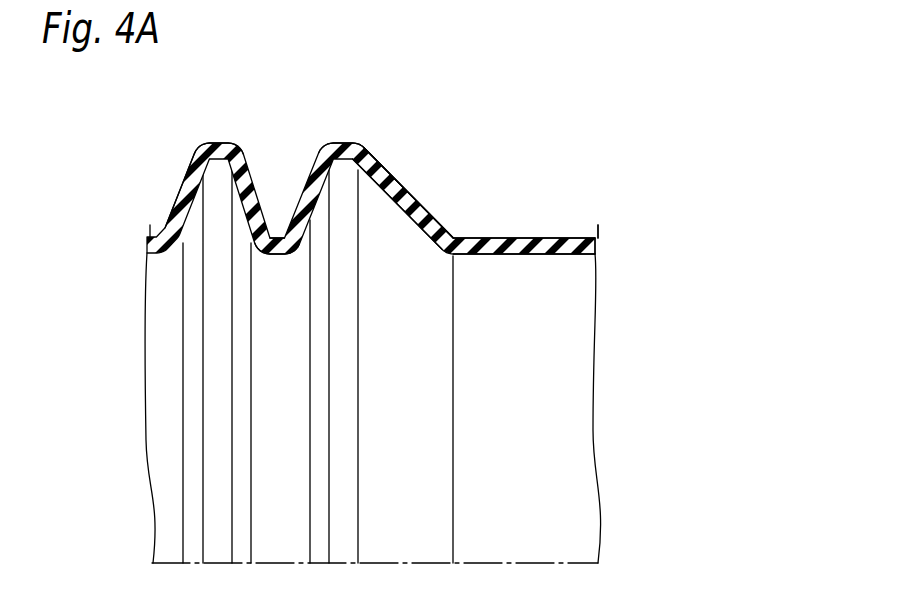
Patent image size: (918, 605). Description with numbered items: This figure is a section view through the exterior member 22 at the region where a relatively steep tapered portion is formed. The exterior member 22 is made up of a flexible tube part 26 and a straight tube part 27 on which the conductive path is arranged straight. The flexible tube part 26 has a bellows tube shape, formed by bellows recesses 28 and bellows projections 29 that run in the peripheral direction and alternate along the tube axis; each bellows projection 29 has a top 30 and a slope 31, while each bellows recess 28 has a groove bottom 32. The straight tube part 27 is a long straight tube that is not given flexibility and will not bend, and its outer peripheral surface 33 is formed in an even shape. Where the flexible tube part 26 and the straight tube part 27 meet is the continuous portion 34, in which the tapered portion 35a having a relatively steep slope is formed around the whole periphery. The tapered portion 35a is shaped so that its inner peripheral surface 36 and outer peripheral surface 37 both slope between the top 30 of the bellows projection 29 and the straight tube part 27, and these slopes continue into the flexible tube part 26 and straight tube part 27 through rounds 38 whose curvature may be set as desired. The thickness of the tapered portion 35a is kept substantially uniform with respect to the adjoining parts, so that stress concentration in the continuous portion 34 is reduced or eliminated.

The exterior member 22 is at (578, 138).
The flexible tube part 26 is at (180, 203).
The straight tube part 27 is at (583, 236).
The bellows recess 28 is at (283, 234).
The bellows projection 29 is at (215, 143).
The top 30 is at (342, 143).
The slope 31 is at (178, 213).
The groove bottom 32 is at (297, 232).
The outer peripheral surface 33 is at (537, 238).
The continuous portion 34 is at (425, 178).
The tapered portion having a relatively steep slope 35a is at (398, 178).
The inner peripheral surface 36 is at (418, 226).
The outer peripheral surface 37 is at (424, 203).
The round 38 is at (366, 144).